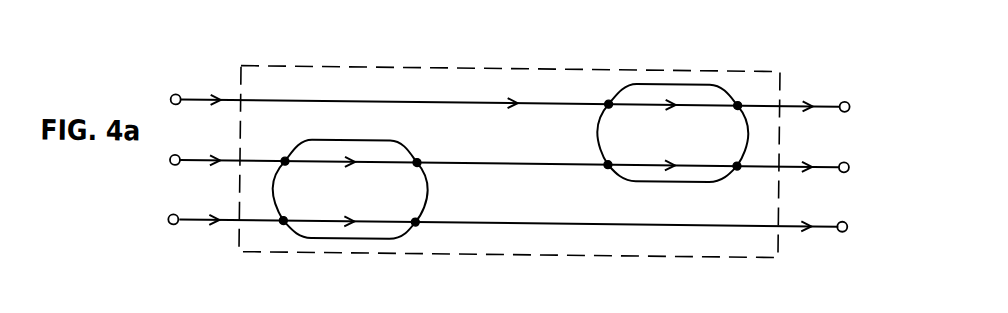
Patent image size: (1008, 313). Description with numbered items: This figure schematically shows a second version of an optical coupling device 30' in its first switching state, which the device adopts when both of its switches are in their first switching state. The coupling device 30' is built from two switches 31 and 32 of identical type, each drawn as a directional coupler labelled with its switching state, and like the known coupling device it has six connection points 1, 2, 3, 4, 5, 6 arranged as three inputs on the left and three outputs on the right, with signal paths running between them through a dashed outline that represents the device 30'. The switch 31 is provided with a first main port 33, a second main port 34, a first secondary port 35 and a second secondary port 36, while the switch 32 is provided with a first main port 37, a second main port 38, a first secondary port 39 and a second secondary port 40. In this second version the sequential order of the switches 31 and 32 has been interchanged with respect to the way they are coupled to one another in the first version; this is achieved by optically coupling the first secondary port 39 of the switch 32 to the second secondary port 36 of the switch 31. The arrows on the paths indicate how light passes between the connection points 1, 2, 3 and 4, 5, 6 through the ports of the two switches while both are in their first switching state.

The connection point 1 is at (164, 98).
The connection point 2 is at (164, 158).
The connection point 3 is at (162, 218).
The connection point 4 is at (856, 105).
The connection point 5 is at (856, 165).
The connection point 6 is at (855, 225).
The coupling device 30' is at (510, 131).
The switch 31 is at (673, 82).
The switch 32 is at (348, 240).
The first main port 33 is at (608, 103).
The second main port 34 is at (737, 164).
The first secondary port 35 is at (737, 103).
The second secondary port 36 is at (608, 164).
The first main port 37 is at (285, 164).
The second main port 38 is at (416, 223).
The first secondary port 39 is at (417, 164).
The second secondary port 40 is at (284, 223).